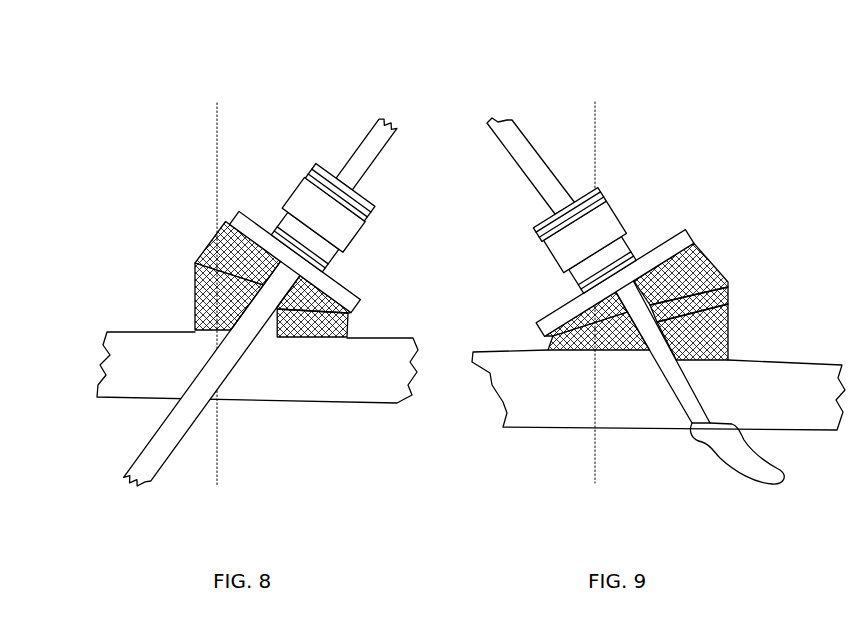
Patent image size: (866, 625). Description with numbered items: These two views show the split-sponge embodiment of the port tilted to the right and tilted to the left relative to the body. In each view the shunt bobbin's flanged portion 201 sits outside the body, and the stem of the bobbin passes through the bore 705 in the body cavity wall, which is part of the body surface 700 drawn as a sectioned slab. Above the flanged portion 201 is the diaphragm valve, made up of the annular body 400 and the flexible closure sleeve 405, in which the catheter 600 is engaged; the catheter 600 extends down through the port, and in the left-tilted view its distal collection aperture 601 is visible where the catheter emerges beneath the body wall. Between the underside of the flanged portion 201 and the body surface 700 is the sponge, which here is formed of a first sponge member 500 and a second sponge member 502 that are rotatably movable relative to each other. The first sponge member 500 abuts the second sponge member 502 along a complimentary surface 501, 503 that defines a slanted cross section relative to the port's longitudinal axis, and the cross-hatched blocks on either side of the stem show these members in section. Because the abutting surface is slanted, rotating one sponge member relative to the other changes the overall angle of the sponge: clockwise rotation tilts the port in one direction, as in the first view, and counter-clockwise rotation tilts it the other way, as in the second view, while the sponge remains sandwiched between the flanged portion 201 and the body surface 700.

In FIG. 8, the flanged portion 201 is at (330, 279).
In FIG. 9, the flanged portion 201 is at (695, 233).
In FIG. 8, the annular body 400 is at (301, 196).
In FIG. 9, the annular body 400 is at (603, 210).
In FIG. 8, the flexible closure sleeve 405 is at (328, 184).
In FIG. 9, the flexible closure sleeve 405 is at (530, 218).
In FIG. 8, the first sponge member 500 is at (237, 335).
In FIG. 9, the first sponge member 500 is at (691, 286).
In FIG. 8, the bottom surface 501 is at (197, 267).
In FIG. 9, the bottom surface 501 is at (725, 285).
In FIG. 8, the second sponge member 502 is at (279, 342).
In FIG. 9, the second sponge member 502 is at (728, 332).
In FIG. 8, the complimentary surface 503 is at (343, 313).
In FIG. 9, the complimentary surface 503 is at (728, 307).
In FIG. 8, the catheter 600 is at (400, 131).
In FIG. 9, the catheter 600 is at (521, 139).
In FIG. 9, the distal collection aperture 601 is at (702, 432).
In FIG. 8, the body surface 700 is at (176, 382).
In FIG. 9, the body surface 700 is at (594, 383).
In FIG. 8, the bore 705 is at (241, 356).
In FIG. 9, the bore 705 is at (681, 398).